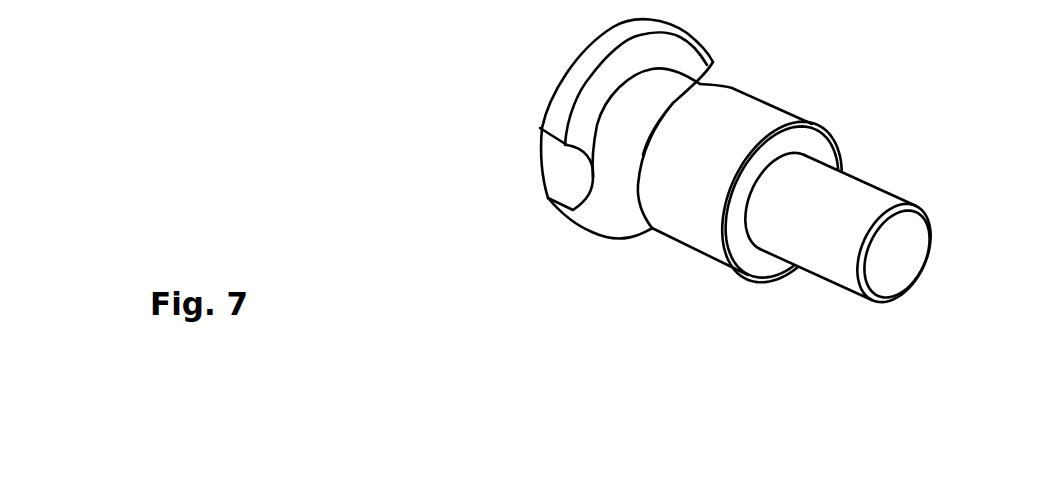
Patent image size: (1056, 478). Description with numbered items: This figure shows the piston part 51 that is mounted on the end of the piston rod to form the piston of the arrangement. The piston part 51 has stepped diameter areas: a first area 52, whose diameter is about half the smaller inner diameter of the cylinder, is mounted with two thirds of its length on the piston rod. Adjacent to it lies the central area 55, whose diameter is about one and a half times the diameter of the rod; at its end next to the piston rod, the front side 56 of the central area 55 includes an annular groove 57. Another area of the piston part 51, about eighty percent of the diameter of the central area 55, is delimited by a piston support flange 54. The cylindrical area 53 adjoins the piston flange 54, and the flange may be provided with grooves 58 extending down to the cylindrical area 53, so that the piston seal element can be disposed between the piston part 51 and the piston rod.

The piston part 51 is at (712, 91).
The first area 52 is at (842, 207).
The cylindrical area 53 is at (620, 140).
The piston support flange 54 is at (637, 52).
The central area 55 is at (698, 165).
The front side 56 is at (796, 125).
The annular groove 57 is at (803, 143).
The grooves 58 is at (575, 162).